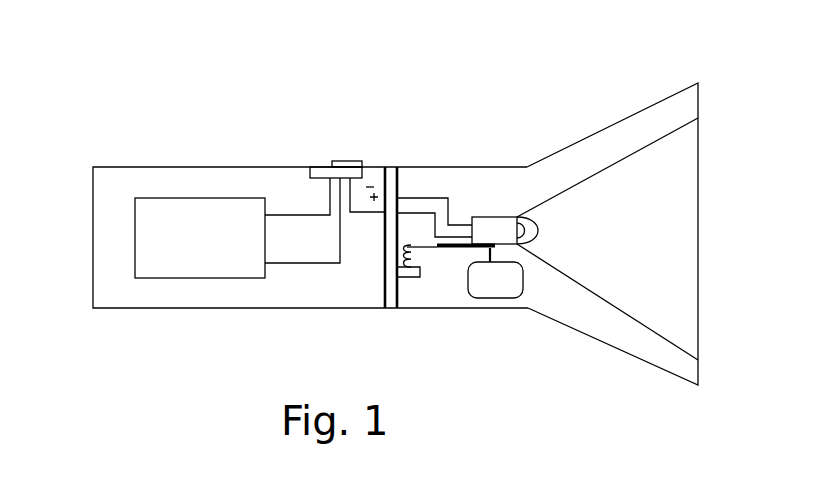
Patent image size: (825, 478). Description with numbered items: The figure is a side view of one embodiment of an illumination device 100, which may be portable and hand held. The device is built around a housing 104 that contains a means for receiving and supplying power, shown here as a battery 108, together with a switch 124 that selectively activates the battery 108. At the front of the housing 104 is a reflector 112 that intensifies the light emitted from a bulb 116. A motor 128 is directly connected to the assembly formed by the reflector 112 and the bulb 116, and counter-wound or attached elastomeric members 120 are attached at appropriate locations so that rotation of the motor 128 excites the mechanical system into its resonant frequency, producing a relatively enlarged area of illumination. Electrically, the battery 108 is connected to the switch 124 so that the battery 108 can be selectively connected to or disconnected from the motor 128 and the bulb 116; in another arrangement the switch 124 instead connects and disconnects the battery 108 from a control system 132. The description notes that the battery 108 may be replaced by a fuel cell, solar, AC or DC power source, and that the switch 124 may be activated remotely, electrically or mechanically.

The illumination device 100 is at (110, 125).
The housing 104 is at (175, 167).
The battery 108 is at (135, 238).
The reflector 112 is at (655, 140).
The bulb 116 is at (538, 242).
The elastomeric members 120 is at (418, 257).
The switch 124 is at (342, 161).
The motor 128 is at (530, 297).
The control system 132 is at (383, 295).